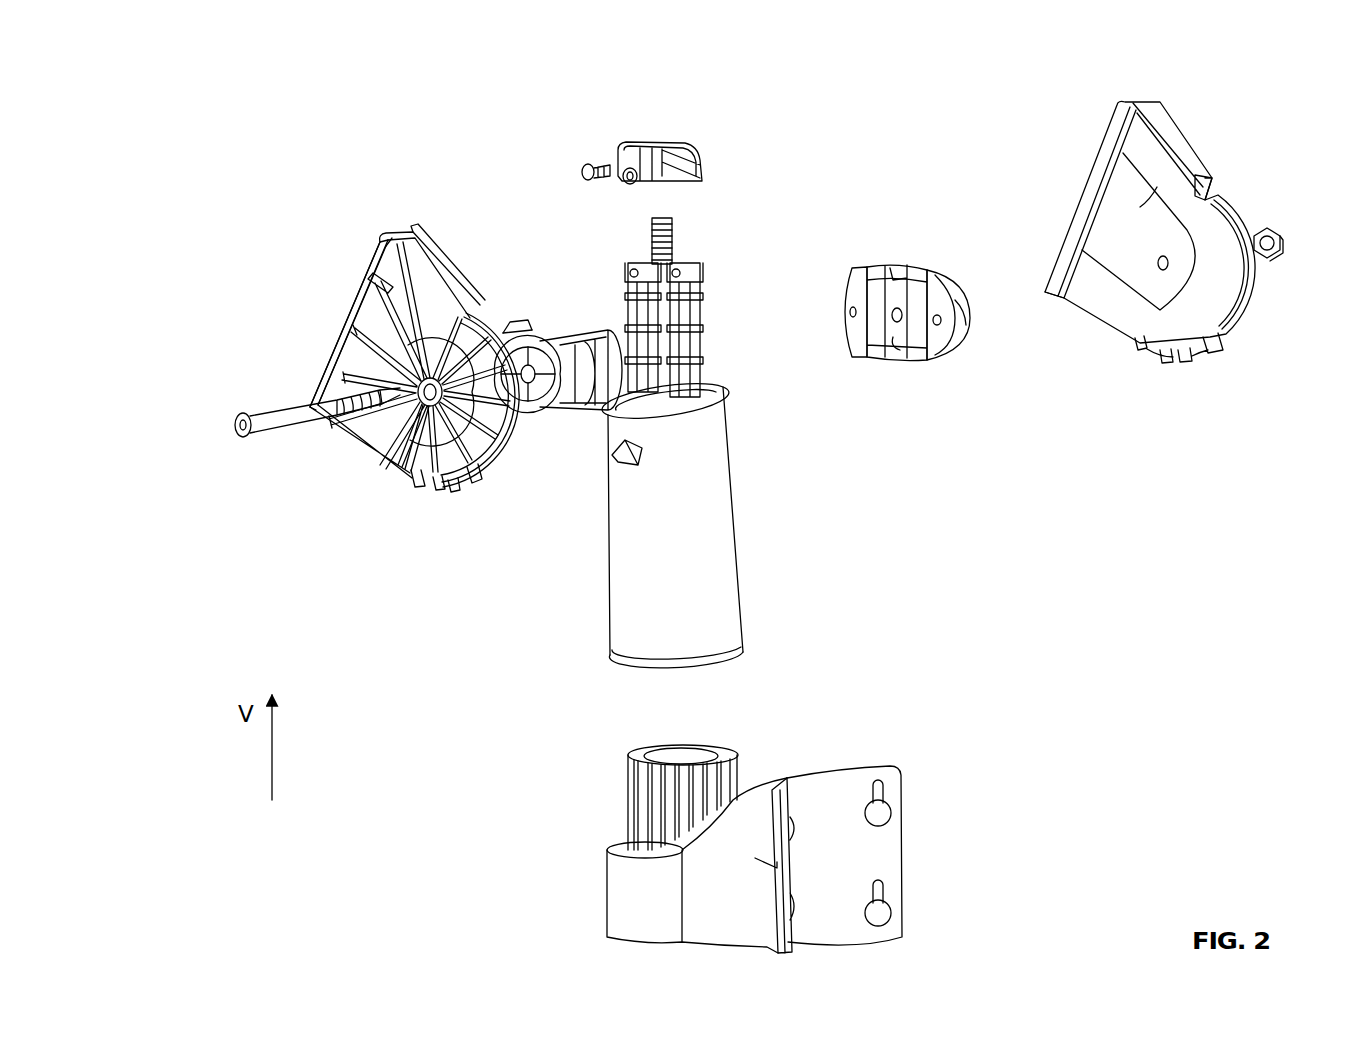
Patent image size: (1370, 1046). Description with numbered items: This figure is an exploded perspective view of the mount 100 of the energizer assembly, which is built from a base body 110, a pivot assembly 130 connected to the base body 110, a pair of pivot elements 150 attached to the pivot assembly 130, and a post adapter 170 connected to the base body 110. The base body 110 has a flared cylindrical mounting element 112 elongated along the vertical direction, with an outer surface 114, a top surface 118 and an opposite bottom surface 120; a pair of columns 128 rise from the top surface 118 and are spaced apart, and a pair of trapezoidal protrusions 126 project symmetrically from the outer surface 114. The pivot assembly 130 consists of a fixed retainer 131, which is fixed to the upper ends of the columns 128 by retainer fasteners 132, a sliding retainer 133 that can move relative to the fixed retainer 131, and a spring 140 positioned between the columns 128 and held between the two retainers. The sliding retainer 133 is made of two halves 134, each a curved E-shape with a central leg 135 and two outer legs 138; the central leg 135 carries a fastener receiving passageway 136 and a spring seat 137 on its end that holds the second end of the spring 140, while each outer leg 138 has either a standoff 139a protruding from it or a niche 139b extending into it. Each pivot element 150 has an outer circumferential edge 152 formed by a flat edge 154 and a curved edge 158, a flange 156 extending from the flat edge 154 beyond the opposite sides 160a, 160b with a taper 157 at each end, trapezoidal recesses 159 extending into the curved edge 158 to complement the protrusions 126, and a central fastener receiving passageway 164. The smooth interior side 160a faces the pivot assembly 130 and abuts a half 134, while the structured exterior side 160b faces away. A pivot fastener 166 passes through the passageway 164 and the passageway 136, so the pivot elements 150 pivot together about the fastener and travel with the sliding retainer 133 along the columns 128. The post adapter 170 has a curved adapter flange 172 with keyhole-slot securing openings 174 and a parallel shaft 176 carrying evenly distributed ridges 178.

The mount 100 is at (1185, 203).
The base body 110 is at (673, 389).
The mounting element 112 is at (655, 389).
The outer surface 114 is at (748, 572).
The top surface 118 is at (708, 392).
The bottom surface 120 is at (615, 660).
The protrusions 126 is at (615, 460).
The columns 128 is at (700, 285).
The pivot assembly 130 is at (896, 283).
The fixed retainer 131 is at (650, 143).
The retainer fasteners 132 is at (623, 178).
The sliding retainer 133 is at (515, 322).
The halves 134 is at (517, 331).
The central leg 135 is at (893, 338).
The fastener receiving passageway 136 is at (890, 318).
The spring seat 137 is at (890, 272).
The outer legs 138 is at (853, 270).
The standoff 139a is at (850, 314).
The niche 139b is at (938, 322).
The spring 140 is at (652, 240).
The pivot elements 150 is at (426, 376).
The outer circumferential edge 152 is at (355, 440).
The flat edge 154 is at (365, 292).
The flange 156 is at (345, 320).
The taper 157 is at (378, 245).
The curved edge 158 is at (520, 425).
The recesses 159 is at (470, 483).
The interior side 160a is at (425, 250).
The exterior side 160b is at (360, 370).
The fastener receiving passageway 164 is at (415, 405).
The pivot fastener 166 is at (237, 422).
The post adapter 170 is at (802, 823).
The adapter flange 172 is at (893, 858).
The securing openings 174 is at (890, 820).
The shaft 176 is at (682, 748).
The ridges 178 is at (650, 808).